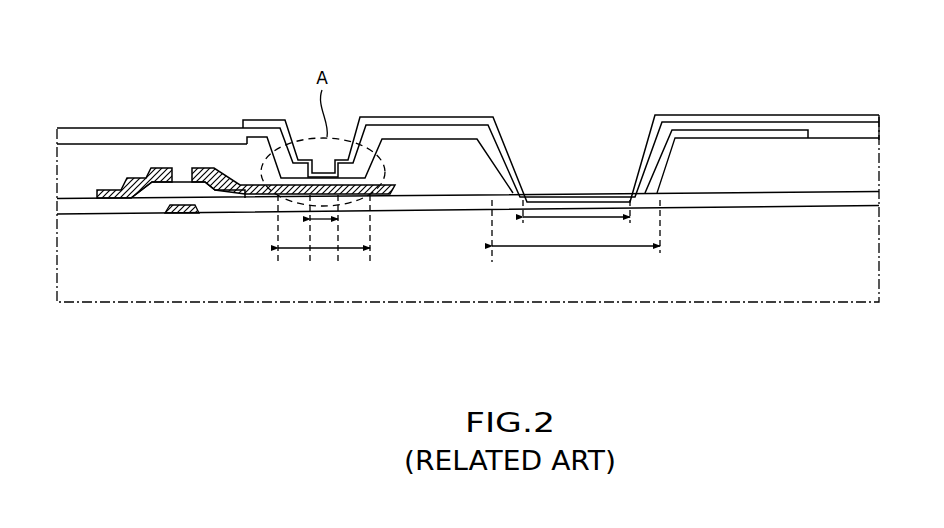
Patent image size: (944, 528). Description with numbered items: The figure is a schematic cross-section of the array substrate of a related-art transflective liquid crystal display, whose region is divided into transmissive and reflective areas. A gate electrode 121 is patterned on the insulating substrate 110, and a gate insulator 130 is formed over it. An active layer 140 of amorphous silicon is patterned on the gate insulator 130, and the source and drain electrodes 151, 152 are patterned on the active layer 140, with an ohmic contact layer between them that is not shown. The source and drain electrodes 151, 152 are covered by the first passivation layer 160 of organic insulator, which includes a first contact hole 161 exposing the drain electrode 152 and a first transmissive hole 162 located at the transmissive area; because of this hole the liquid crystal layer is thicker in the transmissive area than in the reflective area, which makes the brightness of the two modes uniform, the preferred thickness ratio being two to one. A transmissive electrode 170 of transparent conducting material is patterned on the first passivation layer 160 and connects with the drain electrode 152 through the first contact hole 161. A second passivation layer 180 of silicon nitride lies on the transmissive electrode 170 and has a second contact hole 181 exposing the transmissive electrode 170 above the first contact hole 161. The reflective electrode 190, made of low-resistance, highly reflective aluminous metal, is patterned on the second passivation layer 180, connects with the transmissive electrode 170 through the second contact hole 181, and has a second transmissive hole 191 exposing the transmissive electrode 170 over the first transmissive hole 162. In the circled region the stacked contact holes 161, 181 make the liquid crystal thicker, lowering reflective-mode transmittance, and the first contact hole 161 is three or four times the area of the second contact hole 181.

The insulating substrate 110 is at (433, 277).
The gate electrode 121 is at (184, 214).
The gate insulator 130 is at (243, 207).
The active layer 140 is at (184, 175).
The source electrode 151 is at (155, 167).
The drain electrode 152 is at (220, 167).
The first passivation layer 160 is at (76, 157).
The first contact hole 161 is at (324, 260).
The first transmissive hole 162 is at (576, 258).
The transmissive electrode 170 is at (478, 140).
The second passivation layer 180 is at (110, 135).
The second contact hole 181 is at (324, 233).
The reflective electrode 190 is at (453, 118).
The second transmissive hole 191 is at (576, 229).